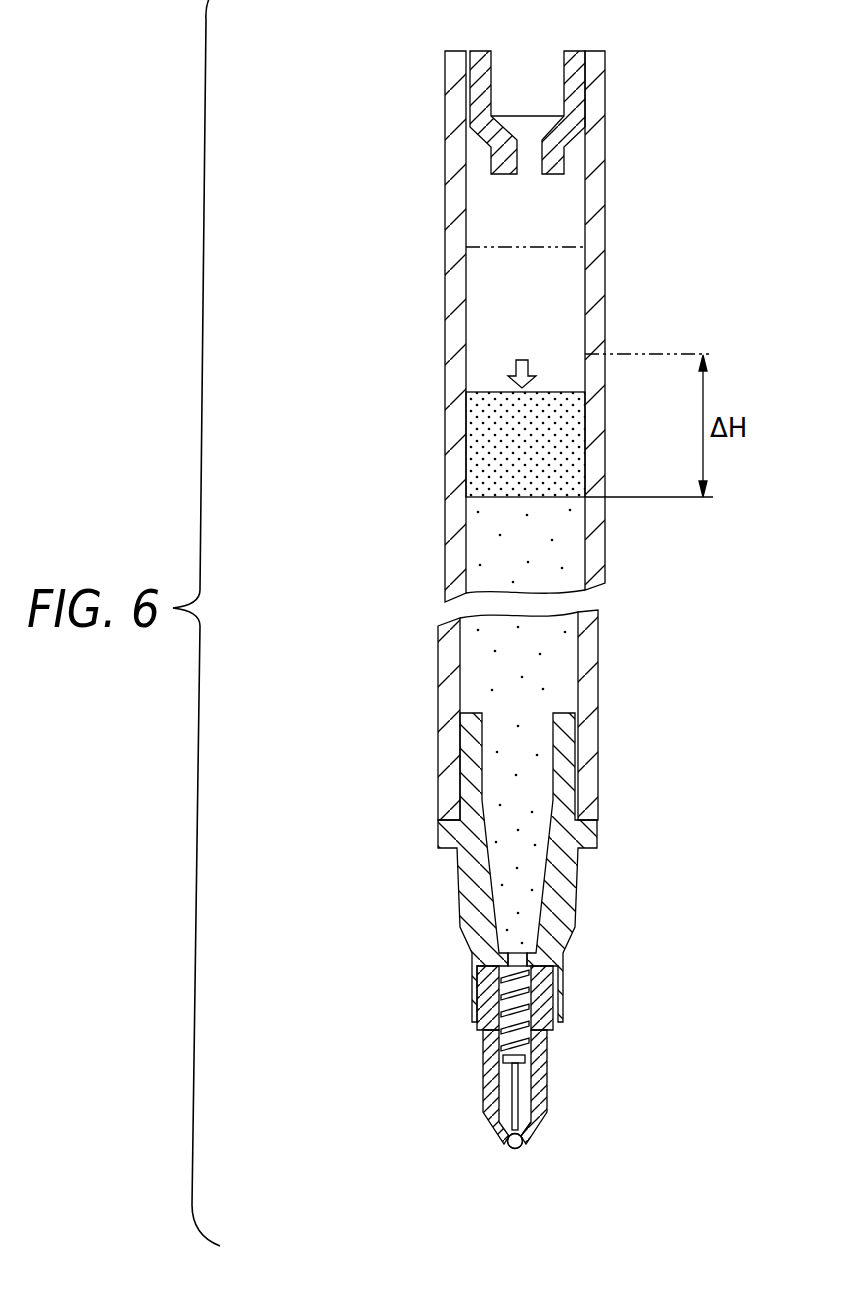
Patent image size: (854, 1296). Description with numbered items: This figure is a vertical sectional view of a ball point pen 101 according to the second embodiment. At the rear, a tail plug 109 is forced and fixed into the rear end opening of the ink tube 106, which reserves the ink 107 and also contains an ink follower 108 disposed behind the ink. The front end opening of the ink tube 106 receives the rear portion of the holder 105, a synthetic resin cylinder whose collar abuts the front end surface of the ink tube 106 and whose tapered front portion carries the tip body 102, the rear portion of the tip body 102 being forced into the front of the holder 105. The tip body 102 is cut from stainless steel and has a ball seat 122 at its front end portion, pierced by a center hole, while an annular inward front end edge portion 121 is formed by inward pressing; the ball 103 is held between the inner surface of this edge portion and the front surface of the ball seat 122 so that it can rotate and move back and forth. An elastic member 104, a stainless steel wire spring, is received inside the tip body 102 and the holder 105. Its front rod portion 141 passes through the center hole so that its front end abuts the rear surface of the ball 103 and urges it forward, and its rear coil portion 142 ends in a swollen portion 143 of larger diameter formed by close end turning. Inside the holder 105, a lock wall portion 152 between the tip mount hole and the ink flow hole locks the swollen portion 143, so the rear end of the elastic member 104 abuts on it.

The ball point pen 101 is at (416, 135).
The tip body 102 is at (483, 1083).
The ball 103 is at (507, 1146).
The elastic member 104 is at (478, 1012).
The holder 105 is at (445, 830).
The ink tube 106 is at (448, 556).
The ink 107 is at (487, 651).
The ink follower 108 is at (500, 442).
The tail plug 109 is at (572, 88).
The front end edge portion 121 is at (523, 1147).
The ball seat 122 is at (533, 1125).
The rod portion 141 is at (518, 1090).
The coil portion 142 is at (533, 1043).
The swollen portion 143 is at (533, 983).
The lock wall portion 152 is at (506, 968).